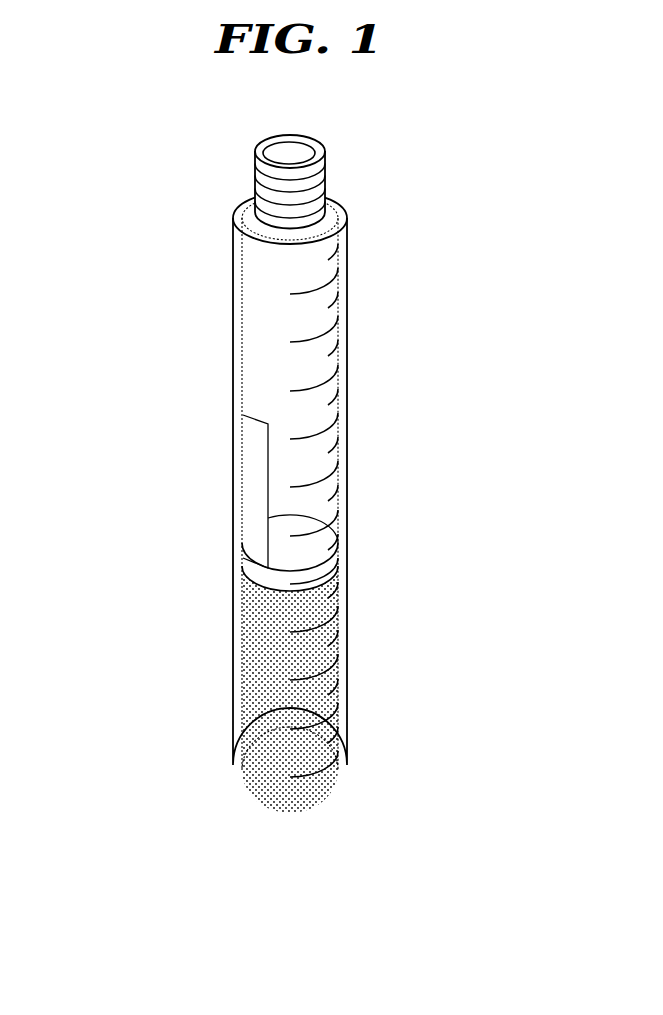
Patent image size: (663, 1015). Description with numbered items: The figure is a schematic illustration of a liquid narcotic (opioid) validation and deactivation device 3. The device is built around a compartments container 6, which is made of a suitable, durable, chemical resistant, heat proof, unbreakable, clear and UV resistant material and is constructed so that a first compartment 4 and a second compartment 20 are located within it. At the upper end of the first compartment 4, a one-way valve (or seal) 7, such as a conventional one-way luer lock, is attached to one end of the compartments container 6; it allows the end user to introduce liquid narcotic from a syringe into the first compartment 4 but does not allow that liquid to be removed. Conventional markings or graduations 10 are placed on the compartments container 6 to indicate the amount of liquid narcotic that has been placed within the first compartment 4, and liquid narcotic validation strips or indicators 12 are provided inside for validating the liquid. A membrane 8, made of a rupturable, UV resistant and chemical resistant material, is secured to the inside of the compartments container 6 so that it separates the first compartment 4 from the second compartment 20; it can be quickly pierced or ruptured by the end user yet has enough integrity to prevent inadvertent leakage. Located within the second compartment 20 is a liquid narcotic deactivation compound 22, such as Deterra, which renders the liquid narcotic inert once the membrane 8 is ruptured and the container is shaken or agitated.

The liquid narcotic validation and deactivation device 3 is at (280, 480).
The first compartment 4 is at (199, 481).
The compartments container 6 is at (233, 382).
The one-way valve 7 is at (255, 180).
The membrane 8 is at (300, 553).
The markings or graduations 10 is at (374, 355).
The liquid narcotic validation strips 12 is at (257, 479).
The second compartment 20 is at (315, 708).
The liquid narcotic deactivation compound 22 is at (257, 719).